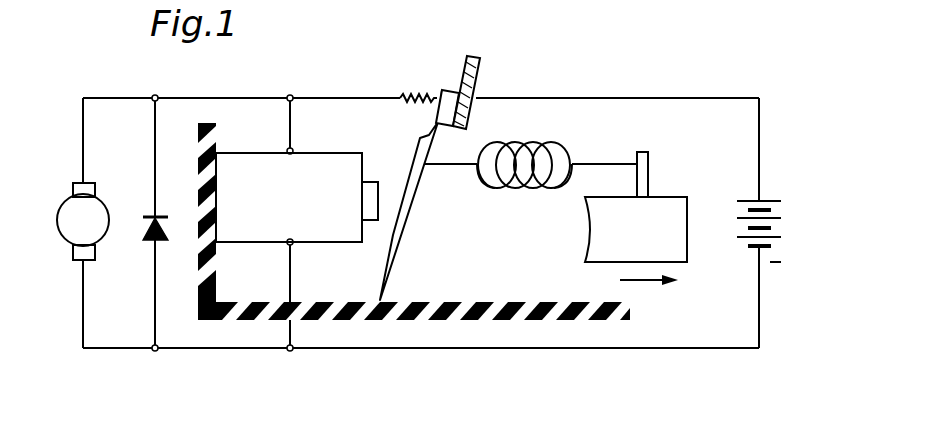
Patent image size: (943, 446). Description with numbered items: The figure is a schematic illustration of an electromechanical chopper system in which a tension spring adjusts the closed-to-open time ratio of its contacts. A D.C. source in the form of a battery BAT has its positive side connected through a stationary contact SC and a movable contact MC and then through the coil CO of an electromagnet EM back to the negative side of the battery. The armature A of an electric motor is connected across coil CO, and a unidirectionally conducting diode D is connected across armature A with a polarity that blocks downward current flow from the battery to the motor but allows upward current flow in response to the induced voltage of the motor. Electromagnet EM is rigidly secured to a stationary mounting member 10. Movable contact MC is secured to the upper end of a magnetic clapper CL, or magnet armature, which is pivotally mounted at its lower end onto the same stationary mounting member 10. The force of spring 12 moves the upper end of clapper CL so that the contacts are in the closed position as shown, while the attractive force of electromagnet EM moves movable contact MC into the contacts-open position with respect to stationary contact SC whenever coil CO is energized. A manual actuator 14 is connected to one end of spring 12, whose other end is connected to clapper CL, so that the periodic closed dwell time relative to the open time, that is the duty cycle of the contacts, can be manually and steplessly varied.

The armature A is at (60, 208).
The unidirectionally conducting diode D is at (148, 215).
The coil CO is at (263, 159).
The electromagnet EM is at (371, 182).
The magnetic clapper CL is at (412, 238).
The movable contact MC is at (448, 88).
The stationary contact SC is at (480, 88).
The spring 12 is at (530, 145).
The manual actuator 14 is at (663, 204).
The battery BAT is at (781, 222).
The stationary mounting member 10 is at (470, 305).